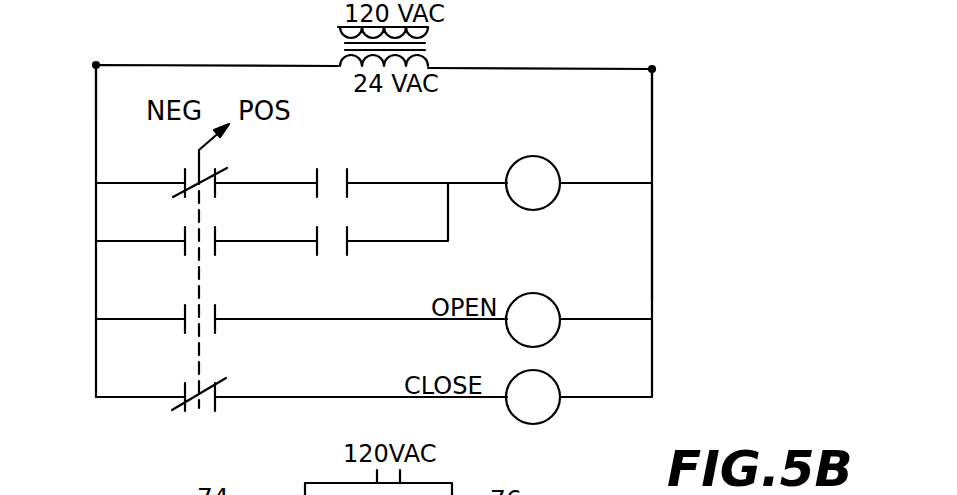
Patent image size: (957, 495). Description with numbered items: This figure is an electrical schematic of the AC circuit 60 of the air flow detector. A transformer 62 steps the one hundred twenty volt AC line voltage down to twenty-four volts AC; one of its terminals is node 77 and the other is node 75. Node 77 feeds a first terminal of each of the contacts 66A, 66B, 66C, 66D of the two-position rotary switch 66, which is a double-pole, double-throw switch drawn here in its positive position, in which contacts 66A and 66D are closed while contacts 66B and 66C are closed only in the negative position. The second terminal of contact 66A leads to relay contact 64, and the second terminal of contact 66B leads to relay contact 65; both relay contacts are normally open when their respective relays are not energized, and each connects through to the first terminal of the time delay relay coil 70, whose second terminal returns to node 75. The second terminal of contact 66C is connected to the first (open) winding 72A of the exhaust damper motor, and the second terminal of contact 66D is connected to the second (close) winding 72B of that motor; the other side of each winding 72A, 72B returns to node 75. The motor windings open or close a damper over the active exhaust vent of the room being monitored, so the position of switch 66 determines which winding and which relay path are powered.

The AC circuit 60 is at (688, 264).
The transformer 62 is at (432, 47).
The relay contact 64 is at (347, 177).
The relay contact 65 is at (347, 255).
The two-position rotary switch 66 is at (203, 420).
The contact 66A is at (214, 178).
The contact 66B is at (185, 246).
The contact 66C is at (214, 310).
The contact 66D is at (185, 405).
The time delay relay coil 70 is at (540, 158).
The first (open) winding 72A is at (545, 297).
The second (close) winding 72B is at (553, 421).
The node 75 is at (657, 66).
The node 77 is at (96, 65).